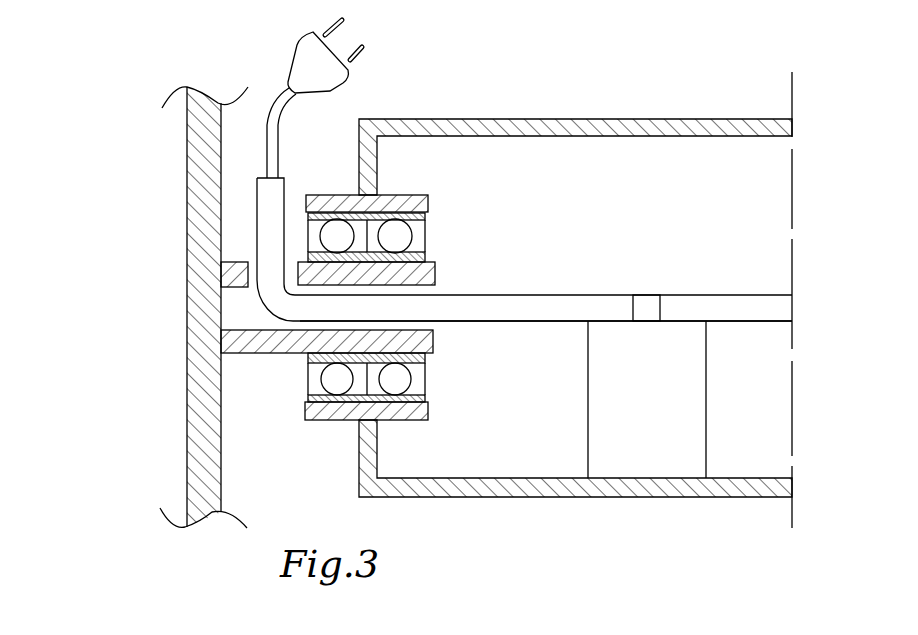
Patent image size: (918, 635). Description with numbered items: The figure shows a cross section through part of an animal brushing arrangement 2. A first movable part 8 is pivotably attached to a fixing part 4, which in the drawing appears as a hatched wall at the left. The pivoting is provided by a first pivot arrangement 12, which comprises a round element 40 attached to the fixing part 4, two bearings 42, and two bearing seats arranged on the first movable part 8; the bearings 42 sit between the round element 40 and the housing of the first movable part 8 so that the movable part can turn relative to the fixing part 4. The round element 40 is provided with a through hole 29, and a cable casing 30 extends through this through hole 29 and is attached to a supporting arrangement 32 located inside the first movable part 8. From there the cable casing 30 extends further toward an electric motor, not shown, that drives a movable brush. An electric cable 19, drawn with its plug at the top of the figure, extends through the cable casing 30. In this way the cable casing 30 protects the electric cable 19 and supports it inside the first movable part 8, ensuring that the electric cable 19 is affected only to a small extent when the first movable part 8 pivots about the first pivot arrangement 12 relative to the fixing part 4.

The animal brushing arrangement 2 is at (122, 75).
The fixing part 4 is at (200, 208).
The first movable part 8 is at (506, 116).
The first pivot arrangement 12 is at (458, 211).
The electric cable 19 is at (277, 133).
The through hole 29 is at (440, 322).
The cable casing 30 is at (543, 307).
The supporting arrangement 32 is at (670, 397).
The round element 40 is at (262, 343).
The bearings 42 is at (370, 387).